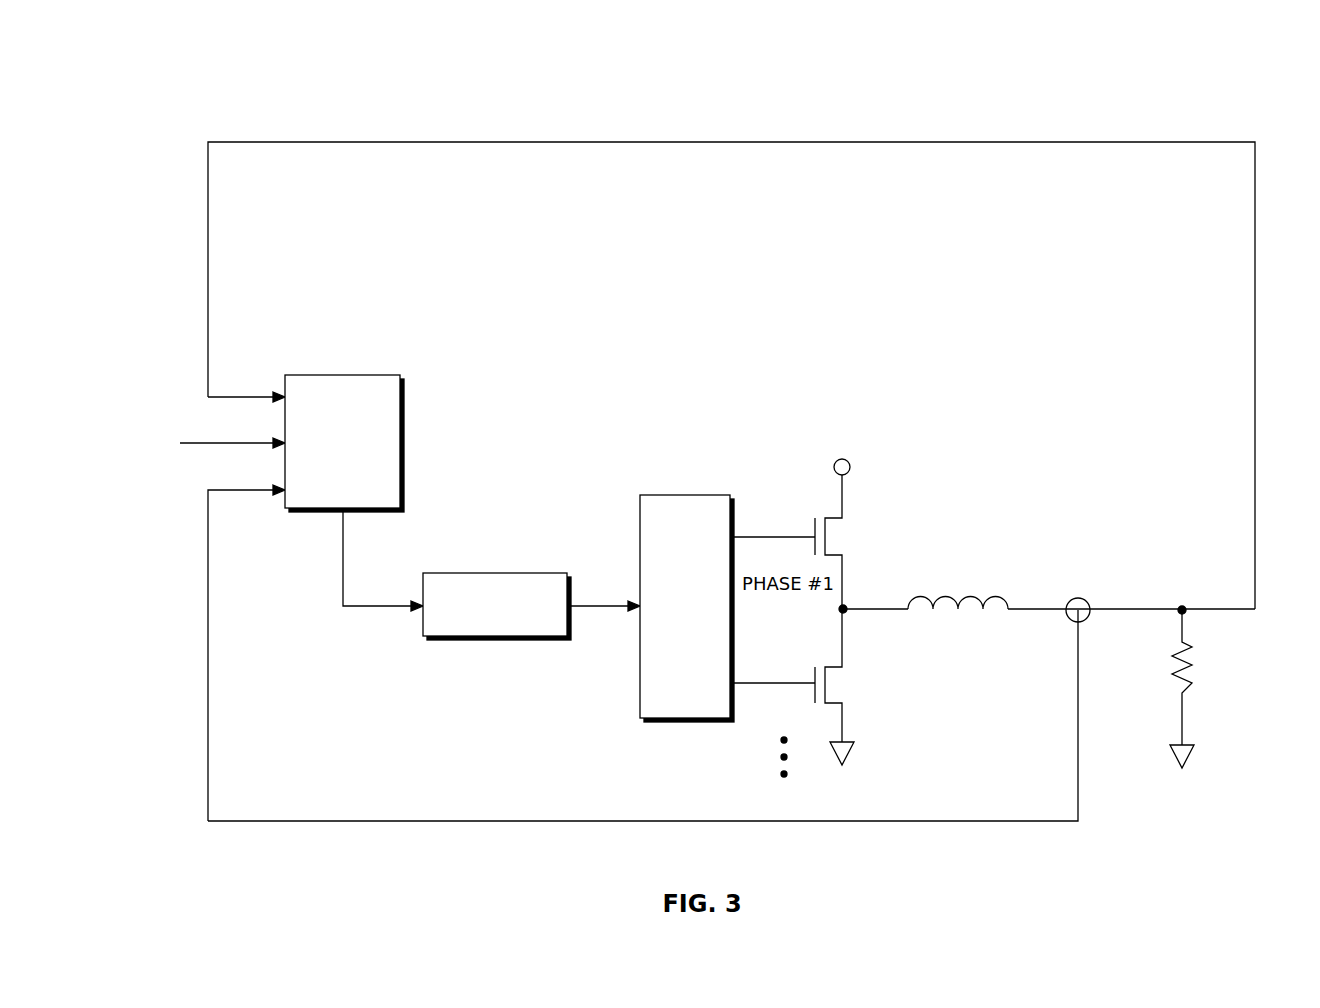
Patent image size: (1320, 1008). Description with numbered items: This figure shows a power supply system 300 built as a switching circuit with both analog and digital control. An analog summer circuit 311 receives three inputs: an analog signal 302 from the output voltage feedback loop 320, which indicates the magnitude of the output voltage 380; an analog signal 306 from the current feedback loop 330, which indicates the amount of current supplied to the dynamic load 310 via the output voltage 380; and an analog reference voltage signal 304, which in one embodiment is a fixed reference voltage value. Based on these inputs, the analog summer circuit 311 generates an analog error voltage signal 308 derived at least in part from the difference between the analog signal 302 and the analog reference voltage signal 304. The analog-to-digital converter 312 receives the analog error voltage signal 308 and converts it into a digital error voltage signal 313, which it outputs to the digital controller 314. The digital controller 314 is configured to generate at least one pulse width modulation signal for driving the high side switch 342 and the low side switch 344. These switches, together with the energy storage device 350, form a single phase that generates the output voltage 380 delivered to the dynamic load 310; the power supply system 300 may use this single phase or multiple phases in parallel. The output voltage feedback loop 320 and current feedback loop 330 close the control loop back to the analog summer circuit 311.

The power supply system 300 is at (1133, 92).
The analog signal 302 is at (207, 243).
The analog reference voltage signal 304 is at (207, 443).
The analog signal 306 is at (207, 643).
The analog error voltage signal 308 is at (353, 606).
The dynamic load 310 is at (1188, 672).
The analog summer circuit 311 is at (385, 375).
The analog-to-digital converter 312 is at (455, 575).
The digital error voltage signal 313 is at (600, 605).
The digital controller 314 is at (667, 495).
The output voltage feedback loop 320 is at (695, 141).
The current feedback loop 330 is at (362, 820).
The high side switch 342 is at (845, 537).
The low side switch 344 is at (845, 683).
The energy storage device 350 is at (992, 597).
The output voltage 380 is at (1255, 343).